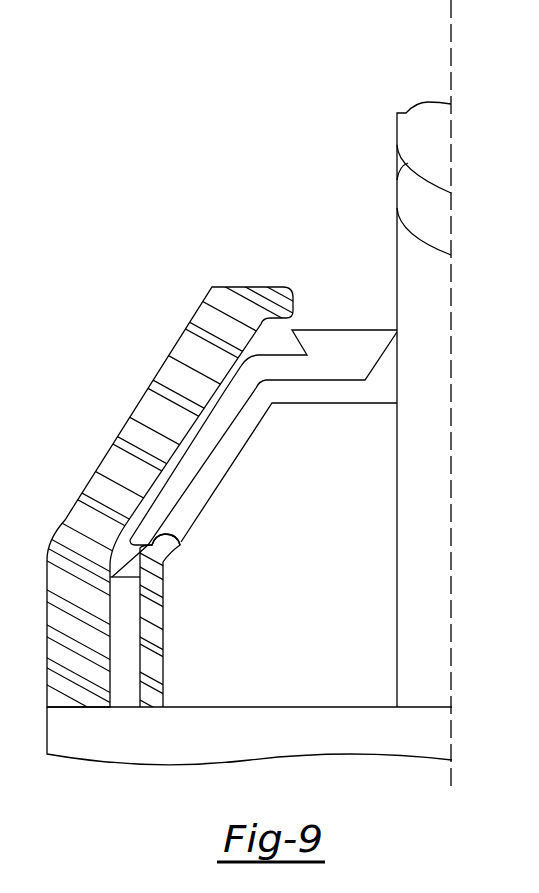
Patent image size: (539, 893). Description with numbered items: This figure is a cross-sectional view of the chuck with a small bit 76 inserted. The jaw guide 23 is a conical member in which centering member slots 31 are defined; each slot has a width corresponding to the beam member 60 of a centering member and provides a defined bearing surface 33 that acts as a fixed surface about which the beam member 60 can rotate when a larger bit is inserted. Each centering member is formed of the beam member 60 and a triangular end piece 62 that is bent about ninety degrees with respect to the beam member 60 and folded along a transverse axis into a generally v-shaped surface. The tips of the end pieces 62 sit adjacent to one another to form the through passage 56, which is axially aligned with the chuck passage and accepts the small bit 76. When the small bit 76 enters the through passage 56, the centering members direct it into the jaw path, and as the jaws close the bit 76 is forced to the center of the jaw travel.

The jaw guide 23 is at (165, 662).
The centering member slots 31 is at (248, 436).
The bearing surface 33 is at (180, 540).
The through passage 56 is at (397, 328).
The beam member 60 is at (189, 466).
The end piece 62 is at (323, 335).
The small bit 76 is at (442, 339).